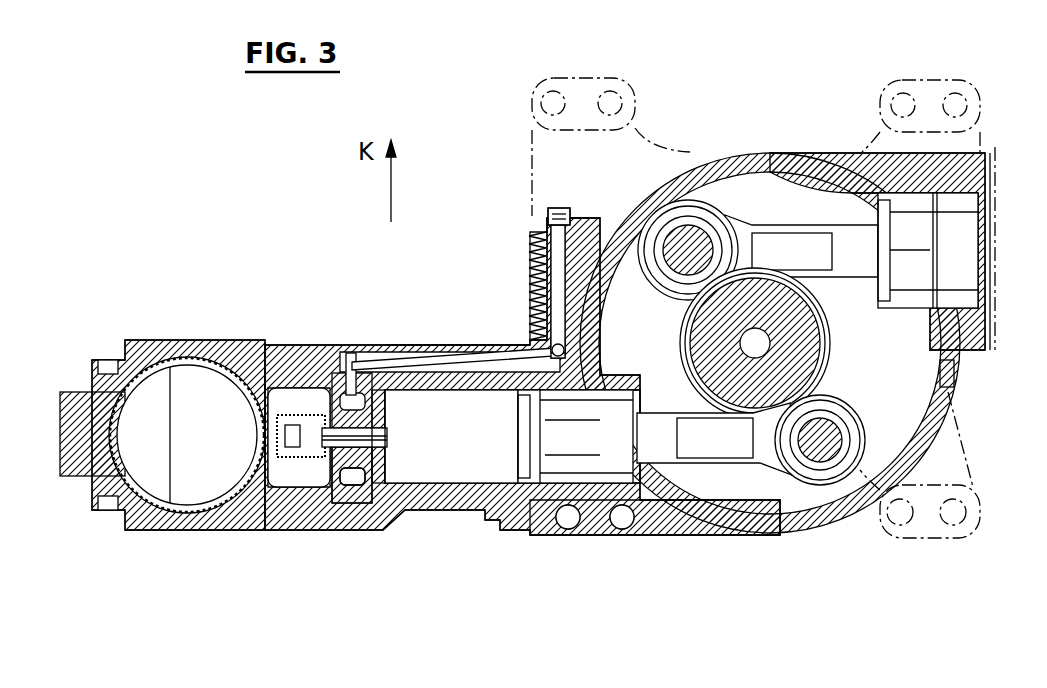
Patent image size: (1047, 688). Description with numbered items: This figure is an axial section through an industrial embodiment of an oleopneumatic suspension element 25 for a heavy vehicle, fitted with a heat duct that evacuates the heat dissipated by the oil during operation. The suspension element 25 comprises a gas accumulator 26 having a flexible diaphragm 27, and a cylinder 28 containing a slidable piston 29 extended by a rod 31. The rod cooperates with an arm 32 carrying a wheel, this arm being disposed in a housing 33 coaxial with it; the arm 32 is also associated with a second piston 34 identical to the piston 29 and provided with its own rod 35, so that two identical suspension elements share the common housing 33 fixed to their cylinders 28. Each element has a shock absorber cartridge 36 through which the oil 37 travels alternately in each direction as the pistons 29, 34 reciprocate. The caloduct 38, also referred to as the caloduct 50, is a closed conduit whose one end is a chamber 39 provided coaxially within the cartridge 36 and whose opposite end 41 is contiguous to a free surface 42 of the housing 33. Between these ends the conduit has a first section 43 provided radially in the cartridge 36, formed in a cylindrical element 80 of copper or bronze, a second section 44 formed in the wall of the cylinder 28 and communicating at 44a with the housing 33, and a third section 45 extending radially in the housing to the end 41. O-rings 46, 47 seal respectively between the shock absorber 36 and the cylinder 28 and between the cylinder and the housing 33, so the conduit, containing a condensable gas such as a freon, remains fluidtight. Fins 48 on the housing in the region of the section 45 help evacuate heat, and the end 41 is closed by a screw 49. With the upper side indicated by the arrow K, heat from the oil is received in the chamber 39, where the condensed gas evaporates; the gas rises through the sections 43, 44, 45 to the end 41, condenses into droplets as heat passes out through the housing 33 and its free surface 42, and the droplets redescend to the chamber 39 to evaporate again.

The suspension element 25 is at (582, 545).
The gas accumulator 26 is at (185, 337).
The flexible diaphragm 27 is at (225, 497).
The cylinder 28 is at (457, 507).
The piston 29 is at (555, 440).
The rod 31 is at (720, 465).
The arm 32 is at (800, 333).
The housing 33 is at (731, 157).
The second piston 34 is at (958, 241).
The rod 35 is at (777, 228).
The shock absorber cartridge 36 is at (320, 478).
The oil 37 is at (418, 473).
The caloduct 38 is at (455, 352).
The chamber 39 is at (352, 480).
The end 41 is at (547, 212).
The free surface 42 is at (588, 217).
The first section 43 is at (352, 348).
The second section 44 is at (395, 368).
The communication point 44a is at (565, 380).
The third section 45 is at (562, 296).
The O-ring 46 is at (378, 395).
The O-ring 47 is at (548, 364).
The fins 48 is at (532, 310).
The screw 49 is at (558, 208).
The caloduct 50 is at (430, 356).
The cylindrical element 80 is at (350, 478).